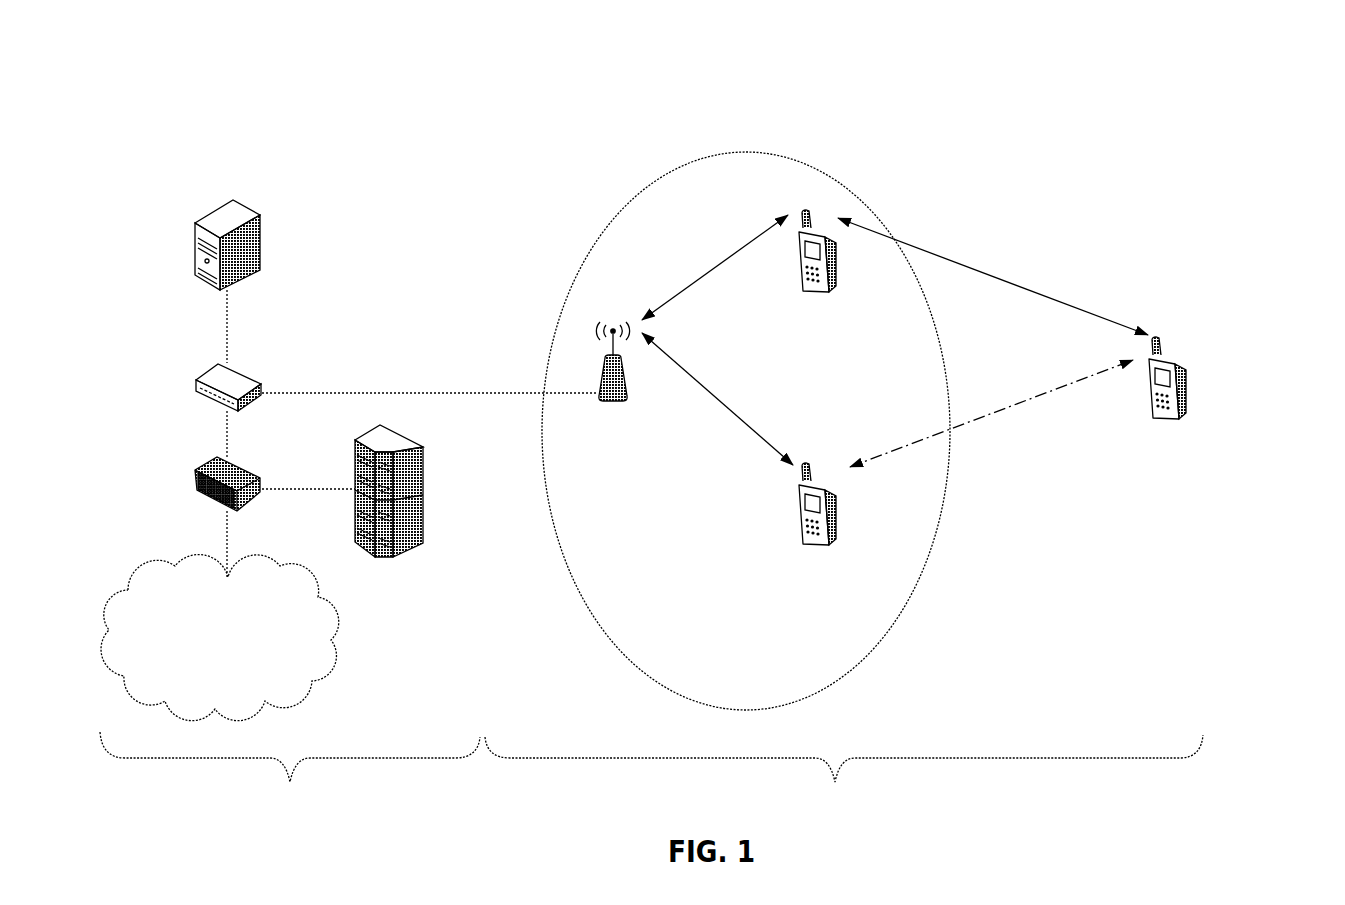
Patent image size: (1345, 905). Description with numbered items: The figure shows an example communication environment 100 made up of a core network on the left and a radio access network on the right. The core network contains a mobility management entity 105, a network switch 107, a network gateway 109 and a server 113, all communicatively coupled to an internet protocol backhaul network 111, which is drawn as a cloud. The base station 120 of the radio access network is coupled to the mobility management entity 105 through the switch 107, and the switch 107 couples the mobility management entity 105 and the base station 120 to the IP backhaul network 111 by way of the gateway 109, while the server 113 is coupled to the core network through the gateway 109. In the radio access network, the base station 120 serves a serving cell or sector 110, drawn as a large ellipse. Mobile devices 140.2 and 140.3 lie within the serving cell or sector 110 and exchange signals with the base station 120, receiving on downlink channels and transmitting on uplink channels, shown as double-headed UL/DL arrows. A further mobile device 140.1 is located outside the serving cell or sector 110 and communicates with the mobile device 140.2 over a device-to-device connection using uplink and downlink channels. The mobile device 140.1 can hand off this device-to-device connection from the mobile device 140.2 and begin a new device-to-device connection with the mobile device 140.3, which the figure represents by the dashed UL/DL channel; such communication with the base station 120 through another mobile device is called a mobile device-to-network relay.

The communication environment 100 is at (1236, 84).
The mobility management entity 105 is at (207, 245).
The network switch 107 is at (208, 387).
The network gateway 109 is at (207, 484).
The IP backhaul network 111 is at (220, 638).
The server 113 is at (389, 507).
The serving cell or sector 110 is at (802, 162).
The base station 120 is at (612, 378).
The mobile device 140.1 is at (1168, 397).
The mobile device 140.2 is at (819, 271).
The mobile device 140.3 is at (820, 523).